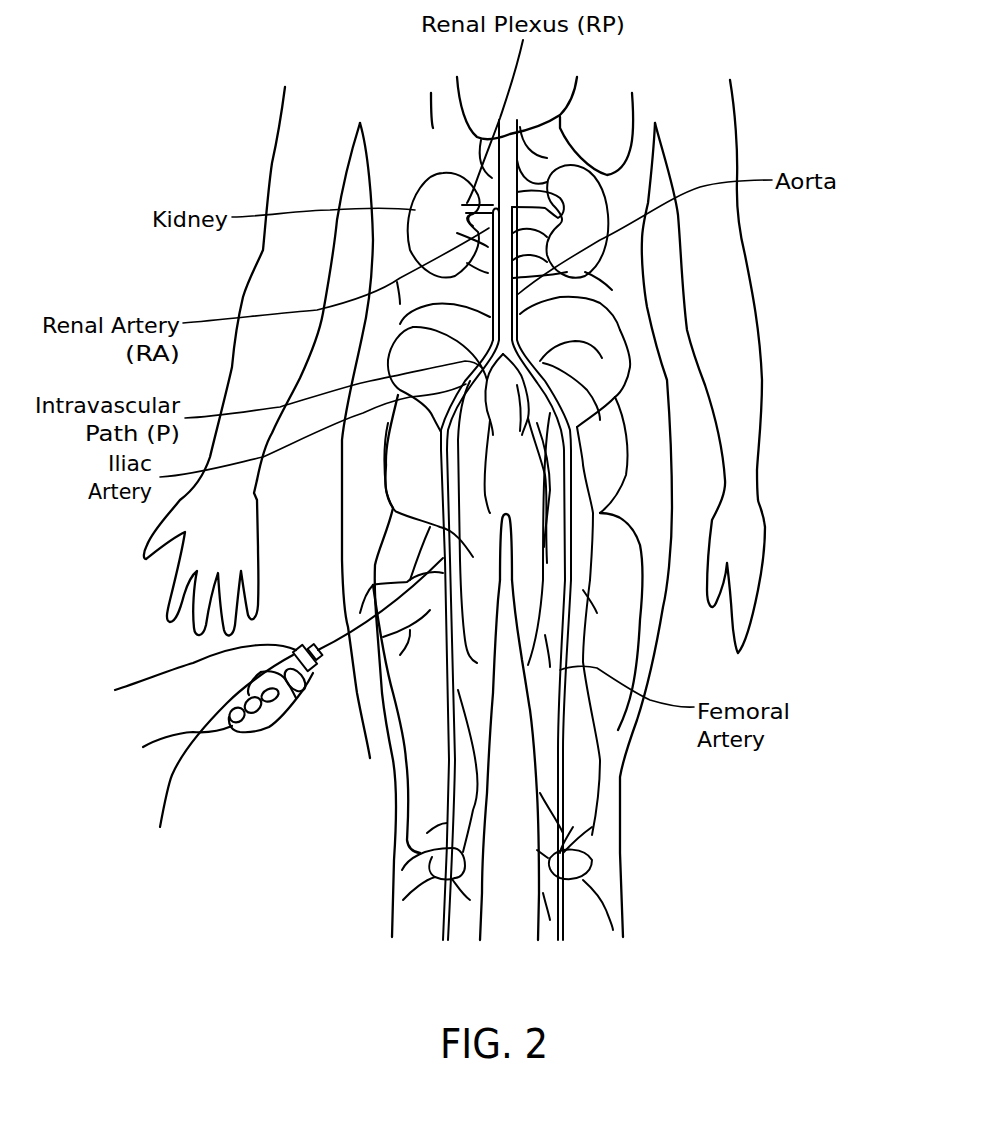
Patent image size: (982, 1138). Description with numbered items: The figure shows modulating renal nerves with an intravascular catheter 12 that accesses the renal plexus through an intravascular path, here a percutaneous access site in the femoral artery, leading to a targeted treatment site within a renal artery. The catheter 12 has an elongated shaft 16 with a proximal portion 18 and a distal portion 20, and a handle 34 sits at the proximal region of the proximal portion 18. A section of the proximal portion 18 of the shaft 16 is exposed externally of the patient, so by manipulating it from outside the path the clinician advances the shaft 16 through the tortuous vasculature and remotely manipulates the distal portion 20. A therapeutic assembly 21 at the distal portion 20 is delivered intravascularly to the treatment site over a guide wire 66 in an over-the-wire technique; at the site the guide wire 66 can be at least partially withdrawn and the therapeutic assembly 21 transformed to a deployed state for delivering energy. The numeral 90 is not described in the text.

The intravascular catheter 12 is at (540, 334).
The elongated shaft 16 is at (333, 657).
The proximal portion 18 is at (313, 670).
The distal portion 20 is at (476, 203).
The therapeutic assembly 21 is at (464, 199).
The handle 34 is at (284, 698).
The guide wire 66 is at (170, 783).
The patient 90 is at (361, 458).